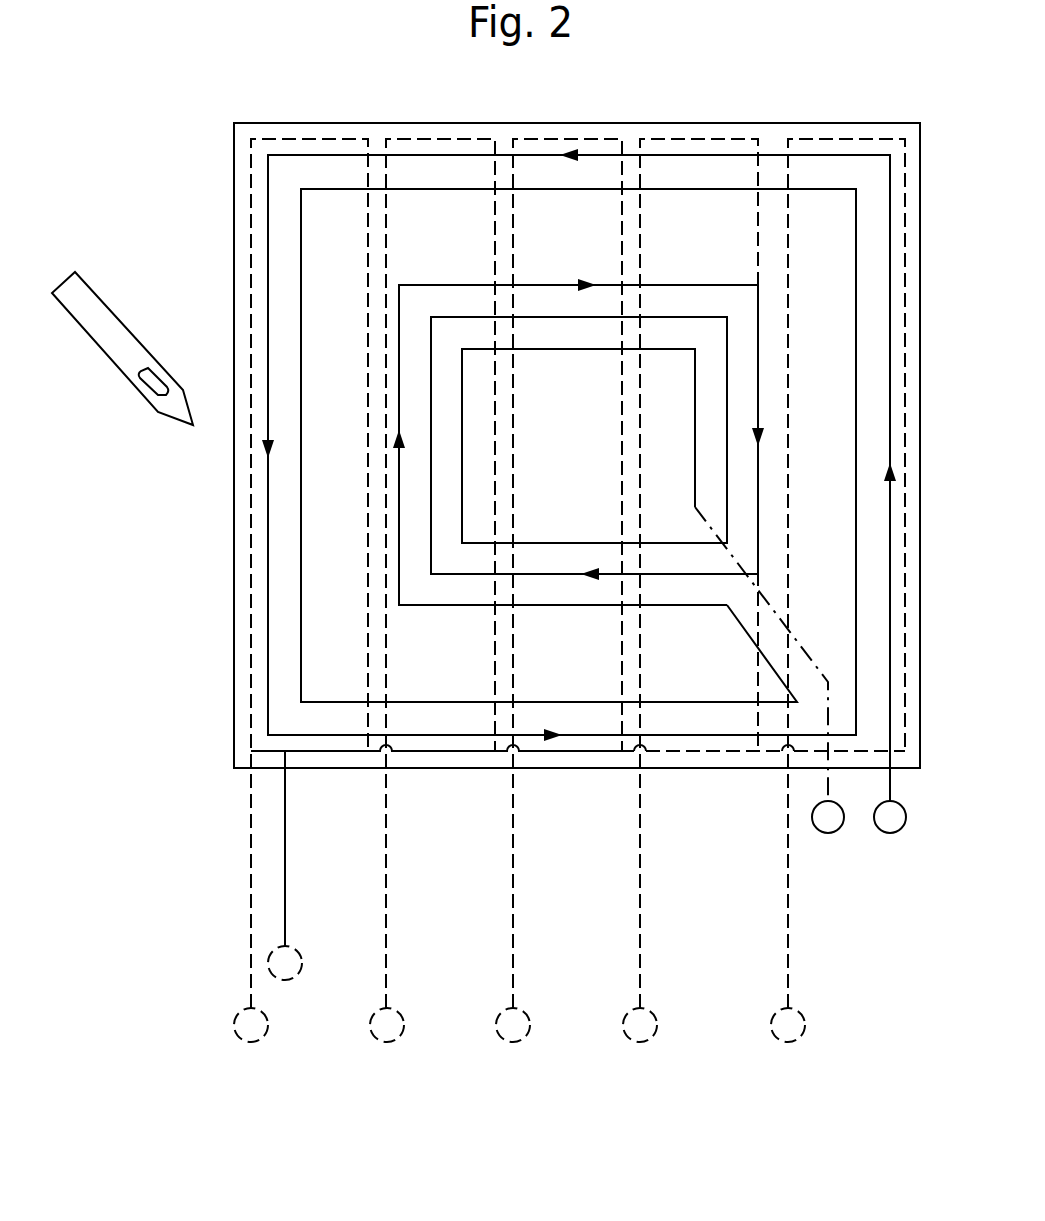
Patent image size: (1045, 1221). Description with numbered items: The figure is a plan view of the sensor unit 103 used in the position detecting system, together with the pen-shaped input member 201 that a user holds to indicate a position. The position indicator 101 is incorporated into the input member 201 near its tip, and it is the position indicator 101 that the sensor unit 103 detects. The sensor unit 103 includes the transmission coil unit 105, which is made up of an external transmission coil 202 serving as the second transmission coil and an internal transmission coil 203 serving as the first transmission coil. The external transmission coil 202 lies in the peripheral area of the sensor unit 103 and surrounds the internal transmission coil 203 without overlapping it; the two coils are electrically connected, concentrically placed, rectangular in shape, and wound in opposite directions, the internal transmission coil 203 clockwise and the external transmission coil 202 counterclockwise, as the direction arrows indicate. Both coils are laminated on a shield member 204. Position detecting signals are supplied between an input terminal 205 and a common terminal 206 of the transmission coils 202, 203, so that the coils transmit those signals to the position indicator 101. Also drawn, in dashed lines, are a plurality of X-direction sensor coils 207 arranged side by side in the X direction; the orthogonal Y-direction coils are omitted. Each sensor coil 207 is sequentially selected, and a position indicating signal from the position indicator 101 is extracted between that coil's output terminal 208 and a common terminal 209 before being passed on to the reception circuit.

The position indicator 101 is at (160, 377).
The sensor unit 103 is at (178, 722).
The transmission coil unit 105 is at (168, 493).
The pen-shaped input member 201 is at (88, 340).
The external transmission coil 202 is at (268, 502).
The internal transmission coil 203 is at (399, 522).
The shield member 204 is at (234, 627).
The input terminal 205 is at (890, 833).
The common terminal 206 is at (828, 833).
The X-direction sensor coils 207 is at (250, 170).
The output terminal 208 is at (820, 1077).
The common terminal 209 is at (268, 962).